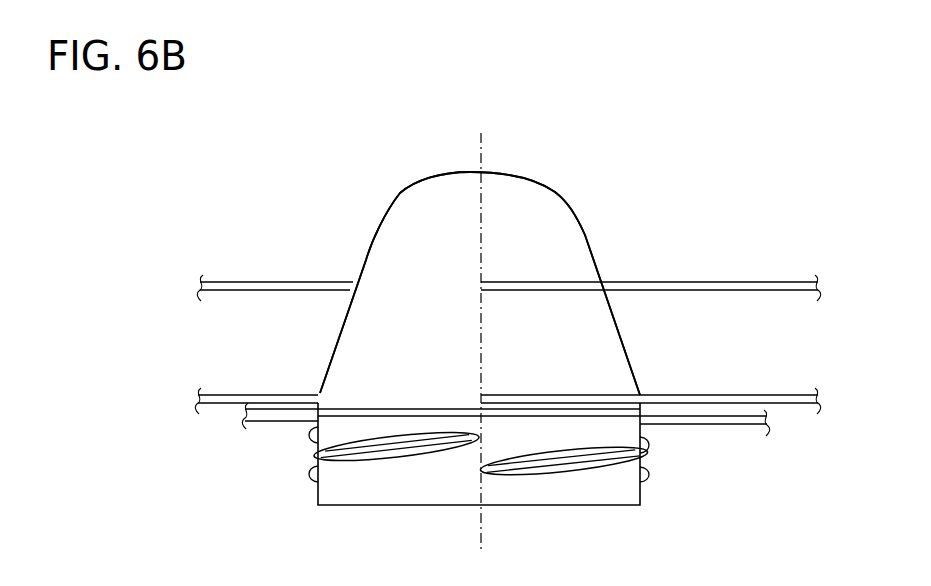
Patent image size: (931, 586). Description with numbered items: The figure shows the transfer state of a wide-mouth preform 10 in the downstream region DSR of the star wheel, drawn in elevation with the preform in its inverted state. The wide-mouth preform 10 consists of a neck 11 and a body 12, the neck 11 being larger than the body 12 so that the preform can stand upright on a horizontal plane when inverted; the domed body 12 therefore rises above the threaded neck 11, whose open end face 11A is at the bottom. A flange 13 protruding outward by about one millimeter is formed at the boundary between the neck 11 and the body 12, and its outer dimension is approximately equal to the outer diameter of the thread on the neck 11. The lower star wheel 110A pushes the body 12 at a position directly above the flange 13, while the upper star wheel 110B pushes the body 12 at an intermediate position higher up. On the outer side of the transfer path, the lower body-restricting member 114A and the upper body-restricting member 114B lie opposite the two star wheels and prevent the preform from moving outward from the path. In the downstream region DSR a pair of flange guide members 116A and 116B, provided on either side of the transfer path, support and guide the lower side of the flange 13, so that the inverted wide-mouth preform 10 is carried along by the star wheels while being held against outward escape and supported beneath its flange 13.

The wide-mouth preform 10 is at (624, 182).
The neck 11 is at (547, 493).
The open end face 11A is at (402, 505).
The body 12 is at (590, 246).
The flange 13 is at (648, 397).
The lower star wheel 110A is at (768, 395).
The upper star wheel 110B is at (768, 282).
The lower body-restricting member 114A is at (258, 395).
The upper body-restricting member 114B is at (258, 282).
The flange guide member 116A is at (244, 421).
The flange guide member 116B is at (738, 426).
The downstream region DSR is at (482, 330).